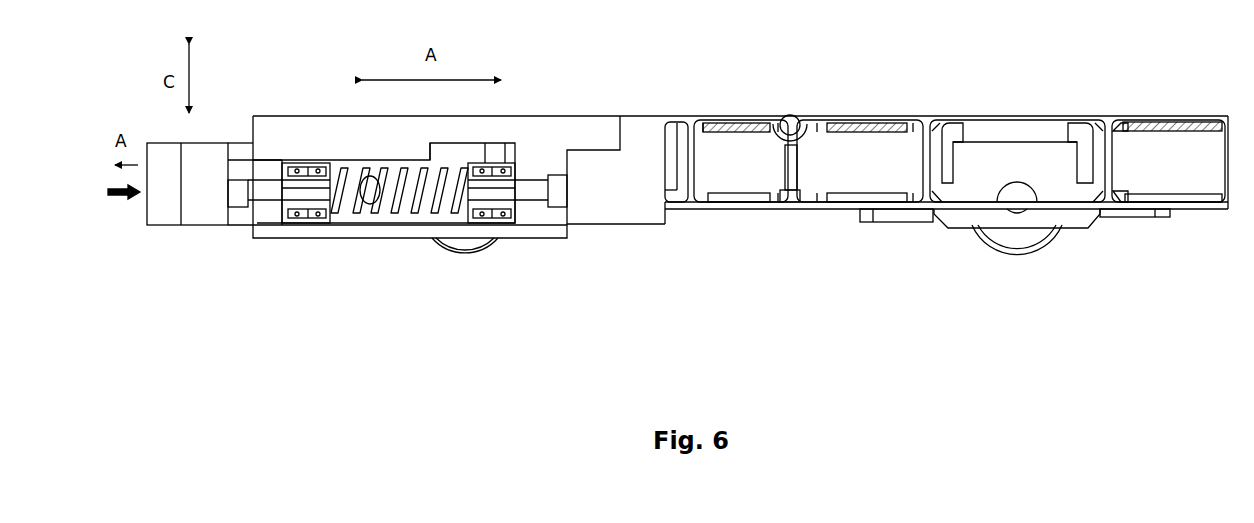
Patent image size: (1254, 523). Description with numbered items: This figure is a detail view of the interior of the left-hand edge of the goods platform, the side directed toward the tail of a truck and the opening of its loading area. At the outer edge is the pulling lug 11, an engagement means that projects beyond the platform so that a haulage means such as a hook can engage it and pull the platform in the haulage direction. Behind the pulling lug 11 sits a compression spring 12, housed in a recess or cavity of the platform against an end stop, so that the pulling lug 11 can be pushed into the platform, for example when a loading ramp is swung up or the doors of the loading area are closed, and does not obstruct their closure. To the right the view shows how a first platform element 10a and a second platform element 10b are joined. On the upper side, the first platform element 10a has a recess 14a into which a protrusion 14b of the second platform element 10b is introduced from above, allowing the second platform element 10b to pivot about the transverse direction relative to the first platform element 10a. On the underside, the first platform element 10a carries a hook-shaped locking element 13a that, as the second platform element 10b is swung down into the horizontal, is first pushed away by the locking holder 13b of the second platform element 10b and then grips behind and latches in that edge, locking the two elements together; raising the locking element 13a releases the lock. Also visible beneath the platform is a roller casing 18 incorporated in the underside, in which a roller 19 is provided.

The pulling lug 11 is at (202, 228).
The compression spring 12 is at (417, 207).
The first platform element 10a is at (870, 156).
The second platform element 10b is at (716, 150).
The locking element 13a is at (800, 202).
The locking holder 13b is at (795, 212).
The recess 14a is at (800, 126).
The protrusion 14b is at (790, 120).
The roller casing 18 is at (1013, 152).
The roller 19 is at (1023, 238).